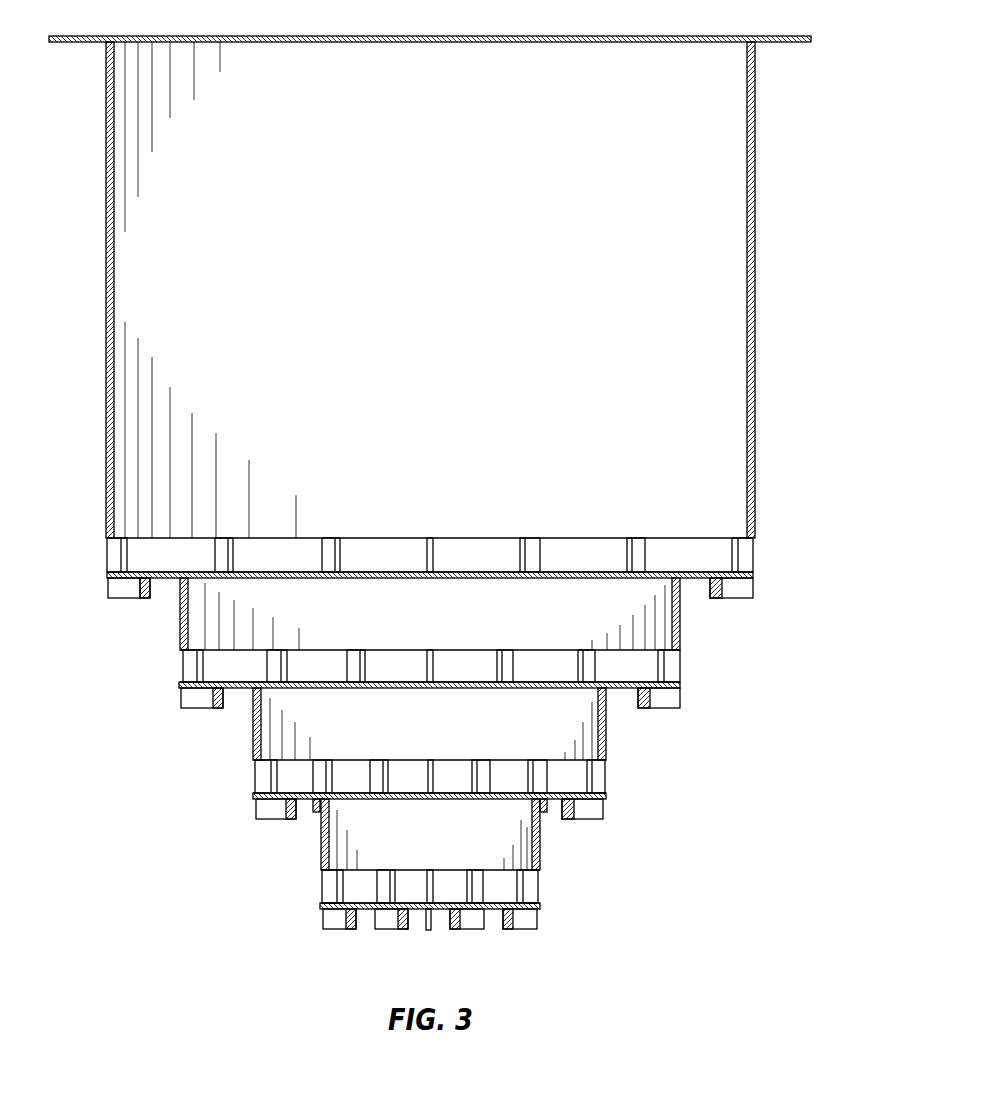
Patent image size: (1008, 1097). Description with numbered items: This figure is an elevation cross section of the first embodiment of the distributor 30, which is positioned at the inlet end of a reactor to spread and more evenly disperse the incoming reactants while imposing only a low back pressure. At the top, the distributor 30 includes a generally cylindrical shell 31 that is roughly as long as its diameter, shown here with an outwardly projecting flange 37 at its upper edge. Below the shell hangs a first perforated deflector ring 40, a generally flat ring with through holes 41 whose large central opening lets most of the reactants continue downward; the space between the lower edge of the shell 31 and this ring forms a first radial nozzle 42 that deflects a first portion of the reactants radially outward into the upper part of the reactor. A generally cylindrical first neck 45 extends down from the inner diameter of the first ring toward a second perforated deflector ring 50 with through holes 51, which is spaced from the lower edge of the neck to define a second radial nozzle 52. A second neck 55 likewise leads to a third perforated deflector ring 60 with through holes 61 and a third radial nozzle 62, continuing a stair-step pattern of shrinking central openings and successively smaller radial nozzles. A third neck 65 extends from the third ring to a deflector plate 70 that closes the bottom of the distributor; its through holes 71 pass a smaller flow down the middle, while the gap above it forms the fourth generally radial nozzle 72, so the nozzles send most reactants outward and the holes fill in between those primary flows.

The distributor 30 is at (760, 129).
The generally cylindrical shell 31 is at (757, 292).
The top flange 37 is at (790, 36).
The first perforated deflector ring 40 is at (735, 597).
The through holes 41 is at (207, 550).
The first radial nozzle 42 is at (727, 557).
The first neck 45 is at (682, 612).
The second perforated deflector ring 50 is at (665, 690).
The through holes 51 is at (214, 688).
The second radial nozzle 52 is at (650, 665).
The second neck 55 is at (607, 725).
The third perforated deflector ring 60 is at (593, 800).
The through holes 61 is at (273, 797).
The third radial nozzle 62 is at (578, 778).
The third neck 65 is at (540, 852).
The deflector plate 70 is at (528, 912).
The through holes 71 is at (337, 905).
The fourth generally radial nozzle 72 is at (500, 887).